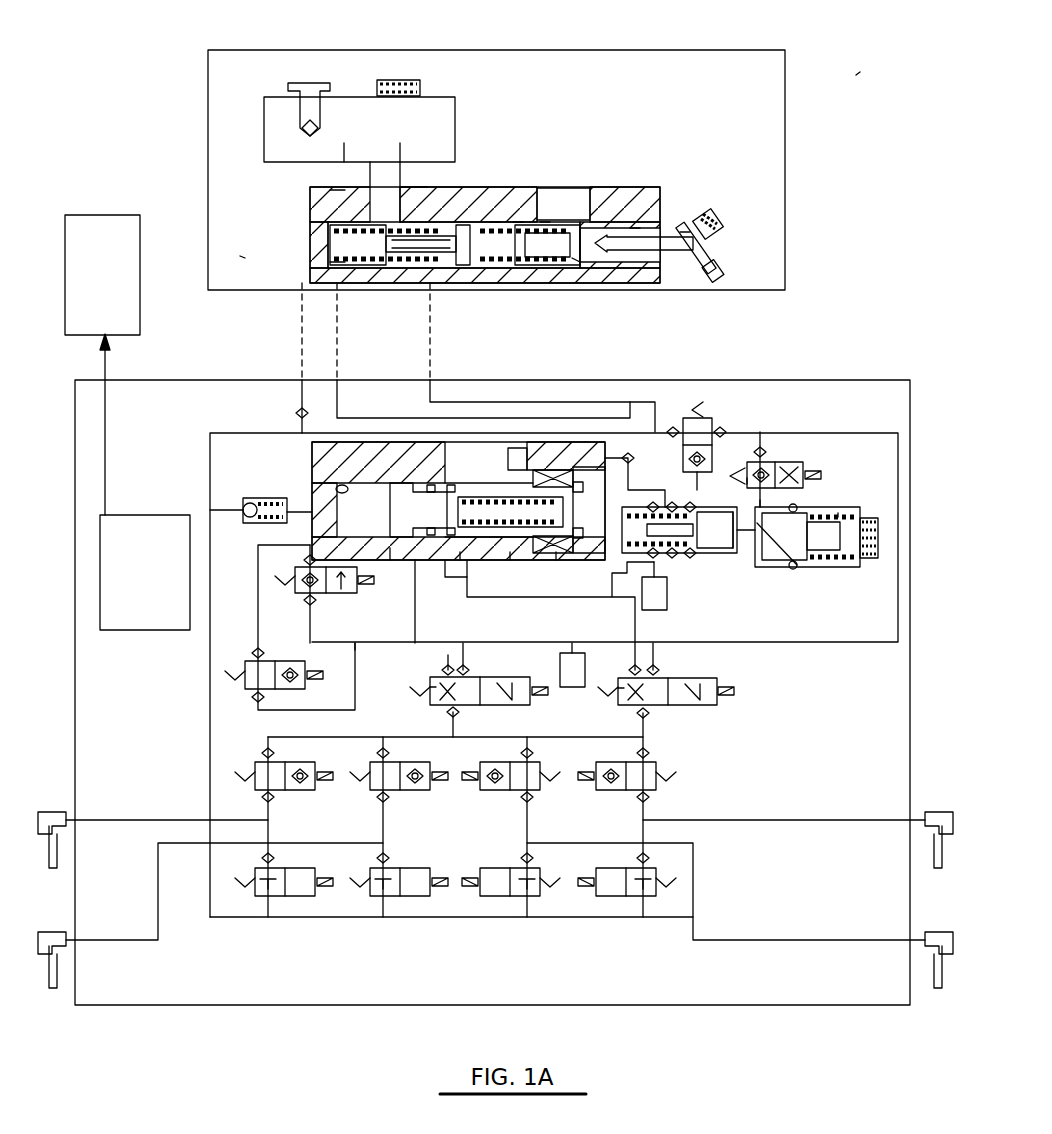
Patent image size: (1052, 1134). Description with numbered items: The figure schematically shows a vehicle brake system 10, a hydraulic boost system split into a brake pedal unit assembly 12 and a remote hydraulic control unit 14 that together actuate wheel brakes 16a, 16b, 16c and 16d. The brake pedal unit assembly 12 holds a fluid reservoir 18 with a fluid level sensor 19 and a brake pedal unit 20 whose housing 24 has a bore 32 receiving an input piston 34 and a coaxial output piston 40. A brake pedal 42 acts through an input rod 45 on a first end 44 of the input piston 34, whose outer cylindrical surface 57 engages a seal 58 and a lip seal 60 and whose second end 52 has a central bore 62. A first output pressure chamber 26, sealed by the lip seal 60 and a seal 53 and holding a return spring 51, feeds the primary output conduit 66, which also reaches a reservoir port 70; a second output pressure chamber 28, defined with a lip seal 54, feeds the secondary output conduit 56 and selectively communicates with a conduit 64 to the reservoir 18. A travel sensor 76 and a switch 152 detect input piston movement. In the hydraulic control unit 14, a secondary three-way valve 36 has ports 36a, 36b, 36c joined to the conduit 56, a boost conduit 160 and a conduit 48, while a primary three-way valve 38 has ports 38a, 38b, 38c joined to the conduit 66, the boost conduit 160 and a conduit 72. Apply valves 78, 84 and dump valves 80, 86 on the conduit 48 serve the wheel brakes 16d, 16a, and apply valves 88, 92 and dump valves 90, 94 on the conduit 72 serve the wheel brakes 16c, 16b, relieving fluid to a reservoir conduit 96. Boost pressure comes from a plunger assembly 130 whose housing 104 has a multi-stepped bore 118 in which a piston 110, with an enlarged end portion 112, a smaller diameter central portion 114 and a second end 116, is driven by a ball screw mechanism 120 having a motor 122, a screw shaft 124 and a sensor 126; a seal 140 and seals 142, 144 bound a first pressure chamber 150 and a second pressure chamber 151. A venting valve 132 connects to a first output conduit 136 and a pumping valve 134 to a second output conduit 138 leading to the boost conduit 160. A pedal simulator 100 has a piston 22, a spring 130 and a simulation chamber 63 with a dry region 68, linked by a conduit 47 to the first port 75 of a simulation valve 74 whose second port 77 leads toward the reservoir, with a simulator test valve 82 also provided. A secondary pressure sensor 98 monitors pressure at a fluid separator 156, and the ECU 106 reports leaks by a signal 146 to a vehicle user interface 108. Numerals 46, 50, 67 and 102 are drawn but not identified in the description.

The vehicle brake system 10 is at (853, 77).
The brake pedal unit assembly 12 is at (786, 192).
The hydraulic control unit 14 is at (862, 380).
The wheel brake 16a is at (66, 938).
The wheel brake 16b is at (925, 942).
The wheel brake 16c is at (925, 822).
The wheel brake 16d is at (66, 816).
The fluid reservoir 18 is at (446, 132).
The fluid level sensor 19 is at (415, 80).
The brake pedal unit 20 is at (667, 133).
The piston 22 is at (770, 552).
The housing 24 is at (330, 213).
The first output pressure chamber 26 is at (538, 228).
The second output pressure chamber 28 is at (328, 233).
The bore 32 is at (340, 190).
The input piston 34 is at (635, 226).
The secondary three-way valve 36 is at (482, 692).
The port 36a is at (443, 668).
The port 36b is at (430, 687).
The port 36c is at (458, 710).
The primary three-way valve 38 is at (690, 673).
The port 38a is at (680, 668).
The port 38b is at (618, 688).
The port 38c is at (652, 708).
The output piston 40 is at (488, 272).
The brake pedal 42 is at (722, 270).
The first end 44 is at (650, 260).
The input rod 45 is at (682, 232).
The pump outlet conduit 46 is at (740, 530).
The conduit 47 is at (762, 503).
The conduit 48 is at (498, 827).
The pedal simulator 50 is at (244, 258).
The return spring 51 is at (518, 222).
The second end 52 is at (508, 275).
The seal 53 is at (400, 270).
The lip seal 54 is at (345, 283).
The secondary output conduit 56 is at (335, 410).
The outer cylindrical surface 57 is at (562, 272).
The seal 58 is at (545, 222).
The lip seal 60 is at (545, 272).
The central bore 62 is at (572, 260).
The simulation chamber 63 is at (798, 567).
The conduit 64 is at (386, 183).
The primary output conduit 66 is at (428, 398).
The seal 67 is at (494, 228).
The region 68 is at (840, 513).
The reservoir port 70 is at (420, 176).
The conduit 72 is at (648, 740).
The simulation valve 74 is at (778, 466).
The first port 75 is at (748, 480).
The travel sensor 76 is at (574, 210).
The second port 77 is at (763, 448).
The apply valve 78 is at (275, 762).
The dump valve 80 is at (288, 862).
The simulator test valve 82 is at (710, 420).
The apply valve 84 is at (392, 762).
The dump valve 86 is at (402, 862).
The apply valve 88 is at (620, 792).
The dump valve 90 is at (612, 864).
The apply valve 92 is at (505, 792).
The dump valve 94 is at (500, 864).
The reservoir conduit 96 is at (243, 505).
The master cylinder secondary pressure sensor 98 is at (668, 553).
The pedal simulator 100 is at (828, 592).
The pressure sensor conduit 102 is at (262, 500).
The housing 104 is at (312, 447).
The ECU 106 is at (128, 632).
The vehicle user interface 108 is at (140, 295).
The piston 110 is at (392, 513).
The enlarged end portion 112 is at (418, 448).
The smaller diameter central portion 114 is at (448, 562).
The second end 116 is at (515, 560).
The multi-stepped bore 118 is at (487, 560).
The ball screw mechanism 120 is at (560, 560).
The motor 122 is at (607, 478).
The screw shaft 124 is at (520, 447).
The sensor 126 is at (573, 412).
The plunger assembly 130 is at (574, 431).
The venting valve 132 is at (243, 690).
The pumping valve 134 is at (290, 582).
The first output conduit 136 is at (312, 492).
The second output conduit 138 is at (355, 648).
The seal 140 is at (400, 550).
The seal 142 is at (453, 447).
The seal 144 is at (497, 447).
The signal 146 is at (100, 375).
The first pressure chamber 150 is at (337, 488).
The second pressure chamber 151 is at (460, 560).
The switch 152 is at (720, 212).
The fluid separator 156 is at (718, 550).
The boost conduit 160 is at (318, 634).